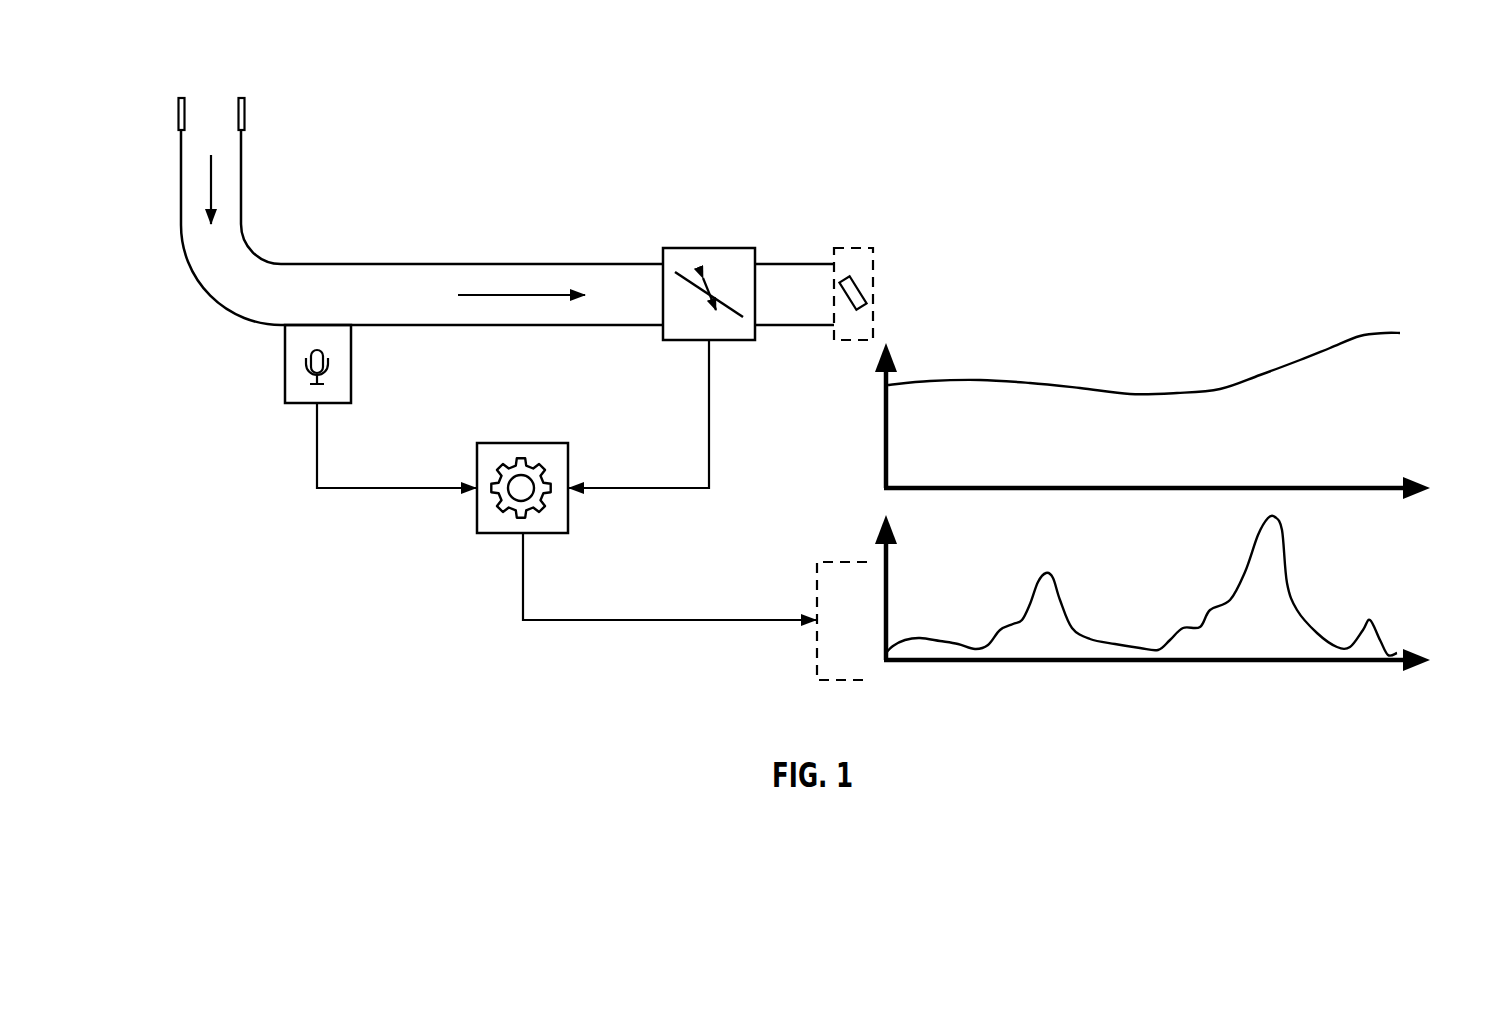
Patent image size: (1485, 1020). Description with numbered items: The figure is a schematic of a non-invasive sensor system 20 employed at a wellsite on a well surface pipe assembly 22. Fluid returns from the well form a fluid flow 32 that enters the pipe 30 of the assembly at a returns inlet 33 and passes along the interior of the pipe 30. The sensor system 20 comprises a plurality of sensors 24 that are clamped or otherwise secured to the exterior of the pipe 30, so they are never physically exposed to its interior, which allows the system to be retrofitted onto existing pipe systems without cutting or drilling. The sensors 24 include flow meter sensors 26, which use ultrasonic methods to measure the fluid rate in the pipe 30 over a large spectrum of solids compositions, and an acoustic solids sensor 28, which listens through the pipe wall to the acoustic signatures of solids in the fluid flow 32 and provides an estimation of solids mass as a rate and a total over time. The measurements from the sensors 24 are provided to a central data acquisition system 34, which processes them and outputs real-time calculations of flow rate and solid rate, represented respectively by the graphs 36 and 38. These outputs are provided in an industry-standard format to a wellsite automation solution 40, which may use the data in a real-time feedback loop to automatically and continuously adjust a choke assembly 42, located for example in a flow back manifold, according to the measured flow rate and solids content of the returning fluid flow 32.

The non-invasive sensor system 20 is at (786, 242).
The well surface pipe assembly 22 is at (200, 304).
The sensors 24 is at (356, 361).
The flow meter sensors 26 is at (688, 280).
The acoustic solids sensor 28 is at (285, 363).
The pipe 30 is at (383, 263).
The fluid flow 32 is at (213, 183).
The returns inlet 33 is at (178, 110).
The central data acquisition system 34 is at (473, 517).
The graph of flow rates 36 is at (1386, 392).
The graph of solid rates 38 is at (1388, 560).
The wellsite automation solution 40 is at (838, 561).
The choke assembly 42 is at (852, 248).